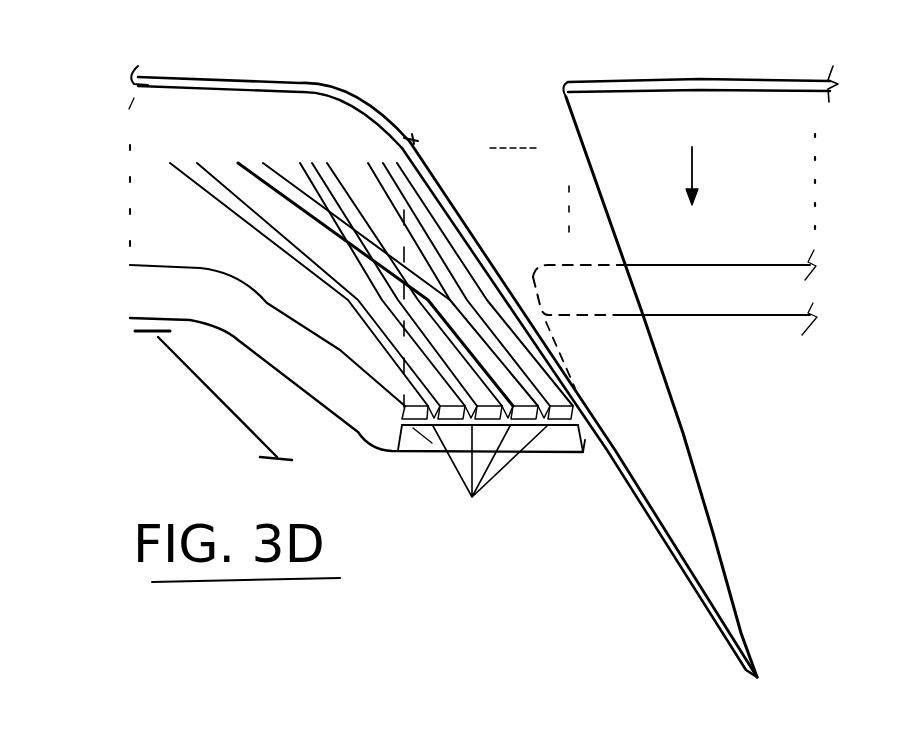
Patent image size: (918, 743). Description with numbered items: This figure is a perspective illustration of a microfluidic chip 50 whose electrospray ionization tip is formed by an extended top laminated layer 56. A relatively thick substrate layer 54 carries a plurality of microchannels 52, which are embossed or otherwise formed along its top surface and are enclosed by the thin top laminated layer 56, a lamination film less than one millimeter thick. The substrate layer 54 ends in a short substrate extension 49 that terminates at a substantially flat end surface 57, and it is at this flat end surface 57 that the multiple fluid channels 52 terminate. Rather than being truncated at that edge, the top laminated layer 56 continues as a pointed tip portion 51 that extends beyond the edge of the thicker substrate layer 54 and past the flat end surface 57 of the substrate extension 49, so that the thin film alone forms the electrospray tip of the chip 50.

The short substrate extension 49 is at (202, 385).
The microfluidic chip 50 is at (42, 314).
The pointed tip portion 51 is at (642, 413).
The microchannels 52 is at (371, 353).
The substrate layer 54 is at (742, 301).
The top laminated layer 56 is at (768, 31).
The flat end surface 57 is at (403, 457).